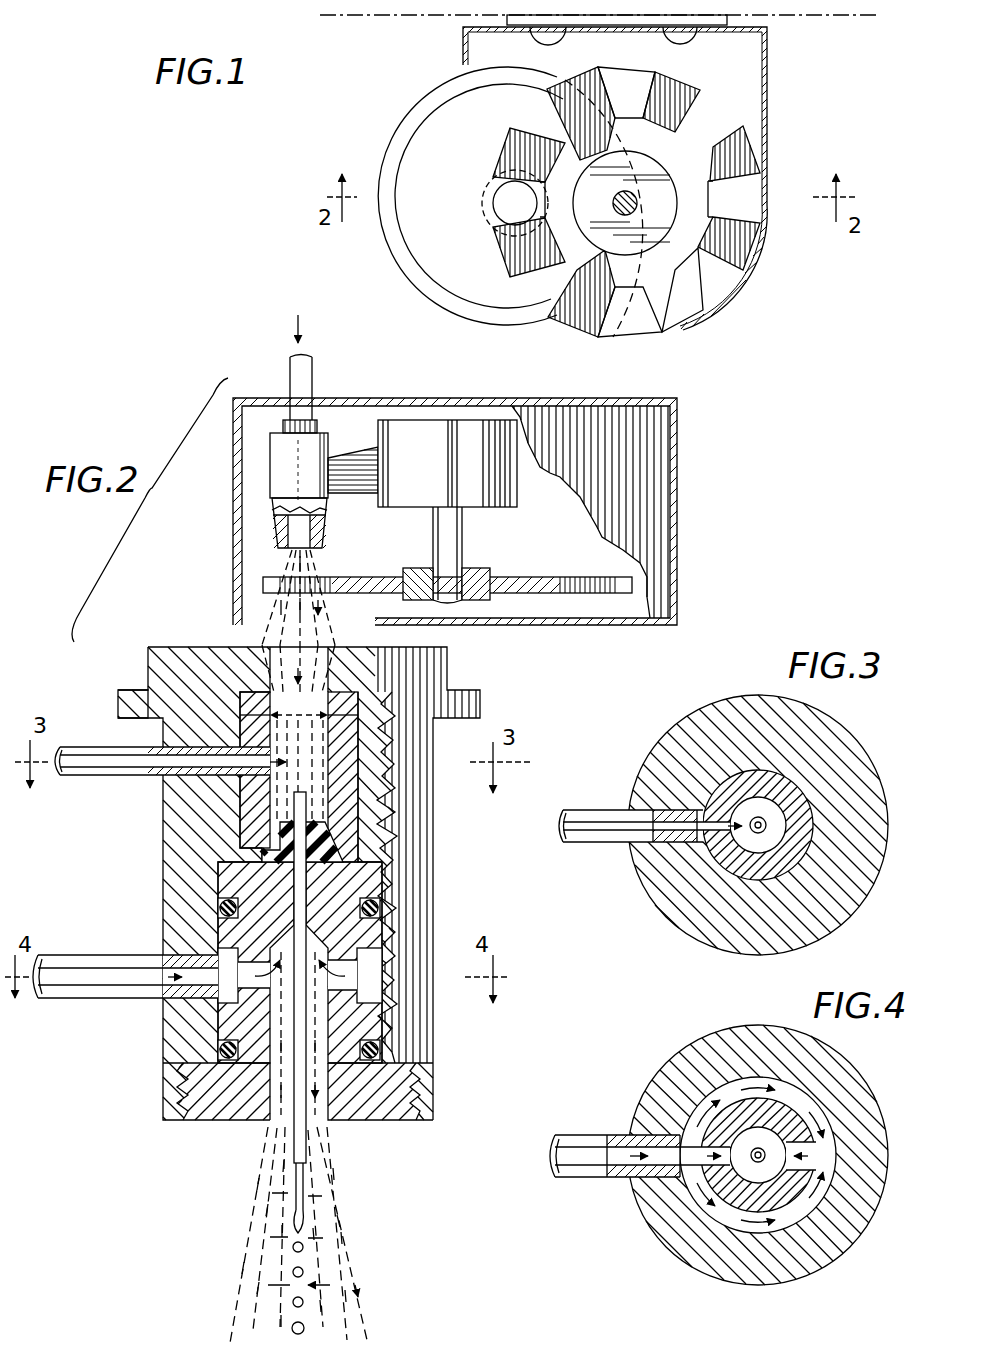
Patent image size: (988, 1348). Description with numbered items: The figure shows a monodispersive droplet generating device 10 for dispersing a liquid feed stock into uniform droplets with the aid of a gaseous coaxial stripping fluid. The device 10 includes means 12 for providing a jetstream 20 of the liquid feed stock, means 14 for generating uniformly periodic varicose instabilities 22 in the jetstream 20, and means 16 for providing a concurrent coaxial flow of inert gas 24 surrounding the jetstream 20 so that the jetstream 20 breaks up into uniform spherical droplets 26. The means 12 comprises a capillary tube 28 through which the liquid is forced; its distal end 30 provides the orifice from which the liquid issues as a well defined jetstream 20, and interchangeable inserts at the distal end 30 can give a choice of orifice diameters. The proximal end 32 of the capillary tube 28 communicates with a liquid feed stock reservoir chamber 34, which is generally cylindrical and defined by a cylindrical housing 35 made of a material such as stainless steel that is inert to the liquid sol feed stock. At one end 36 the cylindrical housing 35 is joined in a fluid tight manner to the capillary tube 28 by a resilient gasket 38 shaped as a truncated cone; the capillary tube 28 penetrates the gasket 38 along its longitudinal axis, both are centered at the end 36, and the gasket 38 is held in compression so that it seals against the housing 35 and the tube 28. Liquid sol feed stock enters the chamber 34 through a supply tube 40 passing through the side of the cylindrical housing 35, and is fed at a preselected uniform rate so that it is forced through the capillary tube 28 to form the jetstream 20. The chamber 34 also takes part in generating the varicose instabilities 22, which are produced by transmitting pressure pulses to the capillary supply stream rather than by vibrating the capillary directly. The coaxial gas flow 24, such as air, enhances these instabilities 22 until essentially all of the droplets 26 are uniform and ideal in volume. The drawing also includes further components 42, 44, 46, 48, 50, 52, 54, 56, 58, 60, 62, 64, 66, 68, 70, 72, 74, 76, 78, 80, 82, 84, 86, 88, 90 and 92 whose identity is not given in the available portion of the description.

In FIG. 2, the monodispersive droplet generating device 10 is at (158, 838).
In FIG. 2, the means for providing a jetstream 12 is at (300, 892).
In FIG. 2, the means for generating varicose instabilities 14 is at (274, 652).
In FIG. 2, the means for providing coaxial gas flow 16 is at (273, 1010).
In FIG. 2, the jetstream 20 is at (297, 1187).
In FIG. 2, the varicose instabilities 22 is at (307, 1198).
In FIG. 2, the coaxial flow of inert gas 24 is at (330, 1255).
In FIG. 2, the uniform spherical droplets 26 is at (304, 1328).
In FIG. 2, the capillary tube 28 is at (298, 1138).
In FIG. 3, the capillary tube 28 is at (764, 818).
In FIG. 4, the capillary tube 28 is at (764, 1148).
In FIG. 2, the distal end 30 is at (290, 1168).
In FIG. 2, the proximal end 32 is at (307, 803).
In FIG. 2, the liquid feed stock reservoir chamber 34 is at (307, 773).
In FIG. 3, the liquid feed stock reservoir chamber 34 is at (752, 840).
In FIG. 2, the cylindrical housing 35 is at (343, 763).
In FIG. 3, the cylindrical housing 35 is at (720, 857).
In FIG. 2, the end of cylindrical housing 36 is at (347, 838).
In FIG. 2, the resilient gasket 38 is at (263, 860).
In FIG. 2, the supply tube 40 is at (88, 766).
In FIG. 3, the supply tube 40 is at (596, 812).
In FIG. 2, the mounting flange 42 is at (357, 690).
In FIG. 2, the gas chamber 44 is at (336, 672).
In FIG. 2, the inlet insert 46 is at (240, 730).
In FIG. 2, the upper body passage 48 is at (268, 690).
In FIG. 1, the body 50 is at (402, 167).
In FIG. 2, the body 50 is at (148, 655).
In FIG. 3, the body 50 is at (832, 913).
In FIG. 4, the body 50 is at (858, 1210).
In FIG. 2, the orifice plate 52 is at (330, 730).
In FIG. 1, the pump outlet 54 is at (496, 202).
In FIG. 2, the pump outlet 54 is at (303, 725).
In FIG. 2, the spray of particles 56 is at (283, 612).
In FIG. 2, the feed nozzle 58 is at (282, 465).
In FIG. 1, the rotor 60 is at (563, 245).
In FIG. 2, the rotor 60 is at (262, 580).
In FIG. 1, the rotor plate 62 is at (650, 318).
In FIG. 2, the rotor plate 62 is at (632, 586).
In FIG. 1, the rotor vanes 64 is at (636, 80).
In FIG. 2, the motor 66 is at (432, 467).
In FIG. 2, the motor shaft 68 is at (455, 548).
In FIG. 1, the housing 70 is at (770, 75).
In FIG. 2, the lower passage 72 is at (322, 1020).
In FIG. 4, the lower passage 72 is at (753, 1173).
In FIG. 2, the inner sleeve 74 is at (360, 938).
In FIG. 2, the liquid inlet port 78 is at (347, 983).
In FIG. 4, the liquid inlet port 78 is at (715, 1162).
In FIG. 2, the end cap 76 is at (207, 1097).
In FIG. 2, the O-ring seal 80 is at (218, 907).
In FIG. 2, the liquid inlet tube 82 is at (68, 992).
In FIG. 4, the liquid inlet tube 82 is at (573, 1178).
In FIG. 2, the annular liquid chamber 84 is at (275, 1022).
In FIG. 4, the annular liquid chamber 84 is at (727, 1090).
In FIG. 2, the seal groove 86 is at (222, 920).
In FIG. 2, the O-ring seal 88 is at (363, 912).
In FIG. 2, the nozzle outlet 90 is at (235, 1122).
In FIG. 2, the retaining ring 92 is at (322, 1092).